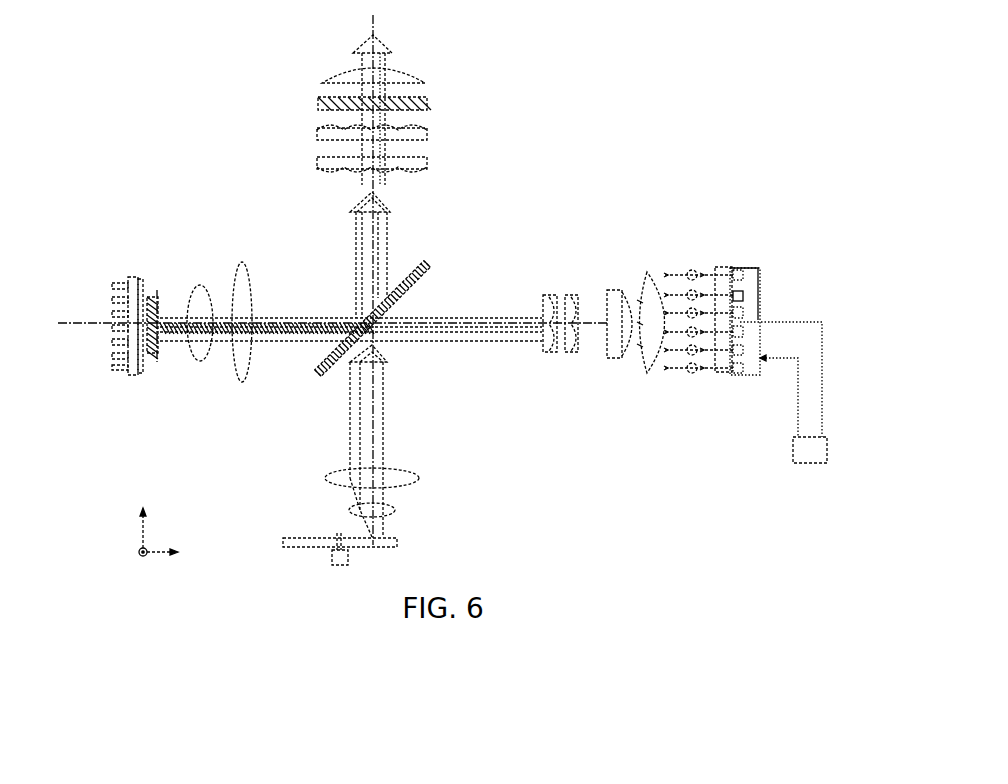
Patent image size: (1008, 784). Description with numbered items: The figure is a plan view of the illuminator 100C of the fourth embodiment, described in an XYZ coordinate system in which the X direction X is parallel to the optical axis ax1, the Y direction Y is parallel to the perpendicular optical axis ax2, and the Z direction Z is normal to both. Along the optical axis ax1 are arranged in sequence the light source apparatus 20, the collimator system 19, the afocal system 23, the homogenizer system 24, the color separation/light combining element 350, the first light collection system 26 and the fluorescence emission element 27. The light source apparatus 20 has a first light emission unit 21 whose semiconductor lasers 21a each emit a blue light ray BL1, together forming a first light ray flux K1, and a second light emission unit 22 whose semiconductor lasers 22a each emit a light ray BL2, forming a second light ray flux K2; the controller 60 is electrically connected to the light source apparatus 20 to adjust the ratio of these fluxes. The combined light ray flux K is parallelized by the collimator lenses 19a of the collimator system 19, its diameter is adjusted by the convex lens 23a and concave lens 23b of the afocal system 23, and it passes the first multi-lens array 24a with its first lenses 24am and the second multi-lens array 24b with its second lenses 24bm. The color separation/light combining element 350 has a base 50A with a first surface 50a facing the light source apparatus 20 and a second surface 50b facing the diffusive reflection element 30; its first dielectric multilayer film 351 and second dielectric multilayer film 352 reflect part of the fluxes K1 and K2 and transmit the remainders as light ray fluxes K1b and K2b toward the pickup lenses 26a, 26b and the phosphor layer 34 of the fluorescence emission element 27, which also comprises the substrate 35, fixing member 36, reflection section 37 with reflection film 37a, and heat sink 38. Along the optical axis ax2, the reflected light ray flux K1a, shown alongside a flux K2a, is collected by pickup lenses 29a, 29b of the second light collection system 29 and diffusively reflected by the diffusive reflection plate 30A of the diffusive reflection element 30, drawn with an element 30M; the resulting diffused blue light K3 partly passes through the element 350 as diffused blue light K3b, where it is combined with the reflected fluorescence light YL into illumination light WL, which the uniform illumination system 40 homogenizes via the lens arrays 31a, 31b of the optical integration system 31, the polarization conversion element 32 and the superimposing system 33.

The illuminator 100C is at (776, 123).
The collimator system 19 is at (693, 264).
The collimator lenses 19a is at (688, 373).
The light source apparatus 20 is at (718, 220).
The first light emission unit 21 is at (724, 267).
The semiconductor lasers 21a is at (745, 311).
The second light emission unit 22 is at (748, 268).
The semiconductor lasers 22a is at (745, 278).
The afocal system 23 is at (670, 238).
The convex lens 23a is at (649, 272).
The concave lens 23b is at (615, 290).
The homogenizer system 24 is at (597, 238).
The first multi-lens array 24a is at (572, 295).
The first lenses 24am is at (575, 352).
The second multi-lens array 24b is at (549, 295).
The second lenses 24bm is at (551, 352).
The first light collection system 26 is at (187, 431).
The pickup lens 26a is at (241, 383).
The pickup lens 26b is at (202, 362).
The fluorescence emission element 27 is at (132, 391).
The second light collection system 29 is at (467, 487).
The pickup lens 29a is at (412, 488).
The pickup lens 29b is at (394, 513).
The diffusive reflection element 30 is at (278, 524).
The diffusive reflection plate 30A is at (310, 538).
The motor 30M is at (331, 559).
The optical integration system 31 is at (477, 117).
The lens array 31a is at (427, 165).
The lens array 31b is at (427, 134).
The polarization conversion element 32 is at (432, 103).
The superimposing system 33 is at (412, 72).
The phosphor layer 34 is at (155, 297).
The substrate 35 is at (141, 279).
The fixing member 36 is at (157, 362).
The reflection section 37 is at (112, 340).
The reflection film 37a is at (114, 311).
The heat sink 38 is at (133, 277).
The uniform illumination system 40 is at (508, 55).
The first surface 50a is at (431, 275).
The second surface 50b is at (337, 321).
The base 50A is at (317, 380).
The color separation/light combining element 350 is at (431, 263).
The first dielectric multilayer film 351 is at (392, 313).
The second dielectric multilayer film 352 is at (291, 366).
The controller 60 is at (805, 463).
The optical axis ax1 is at (65, 330).
The optical axis ax2 is at (380, 32).
The light ray flux K is at (527, 279).
The first light ray flux K1 is at (480, 320).
The light ray flux K1a is at (378, 405).
The light ray flux K1b is at (188, 318).
The second light ray flux K2 is at (509, 330).
The second excitation light component K2a is at (350, 431).
The light ray flux K2b is at (198, 362).
The diffused blue light K3 is at (384, 444).
The diffused blue light K3b is at (358, 225).
The fluorescence light YL is at (356, 262).
The illumination light WL is at (360, 75).
The light ray BL1 is at (727, 377).
The light ray BL2 is at (737, 383).
The X direction X is at (171, 550).
The Y direction Y is at (143, 518).
The Z direction Z is at (137, 550).